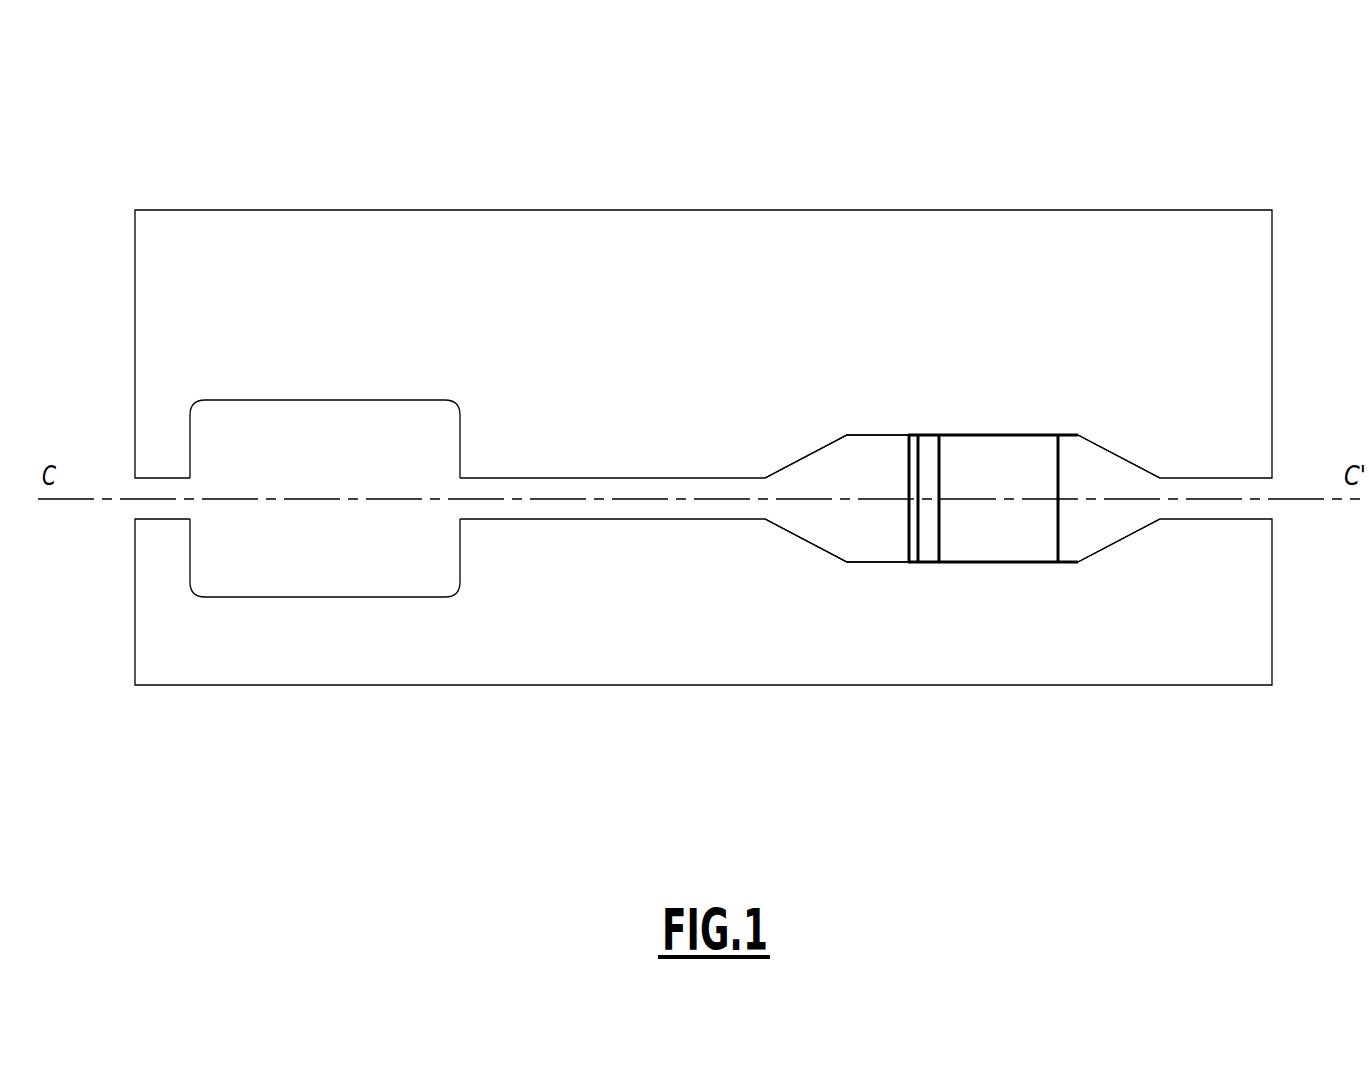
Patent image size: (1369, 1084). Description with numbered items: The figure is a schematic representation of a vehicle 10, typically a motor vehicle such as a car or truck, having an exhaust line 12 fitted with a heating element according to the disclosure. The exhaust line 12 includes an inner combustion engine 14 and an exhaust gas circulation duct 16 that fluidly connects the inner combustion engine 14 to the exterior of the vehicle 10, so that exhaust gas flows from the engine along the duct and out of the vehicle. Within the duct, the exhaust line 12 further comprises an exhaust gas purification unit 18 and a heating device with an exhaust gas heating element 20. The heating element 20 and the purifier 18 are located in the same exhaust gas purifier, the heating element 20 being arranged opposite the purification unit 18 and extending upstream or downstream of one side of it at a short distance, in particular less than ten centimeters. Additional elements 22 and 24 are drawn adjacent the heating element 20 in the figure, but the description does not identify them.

The vehicle 10 is at (1195, 195).
The exhaust line 12 is at (583, 572).
The inner combustion engine 14 is at (338, 375).
The exhaust gas circulation duct 16 is at (872, 435).
The exhaust gas purification unit 18 is at (1022, 538).
The exhaust gas heating element 20 is at (908, 562).
The first wall 22 is at (909, 503).
The second wall 24 is at (918, 500).